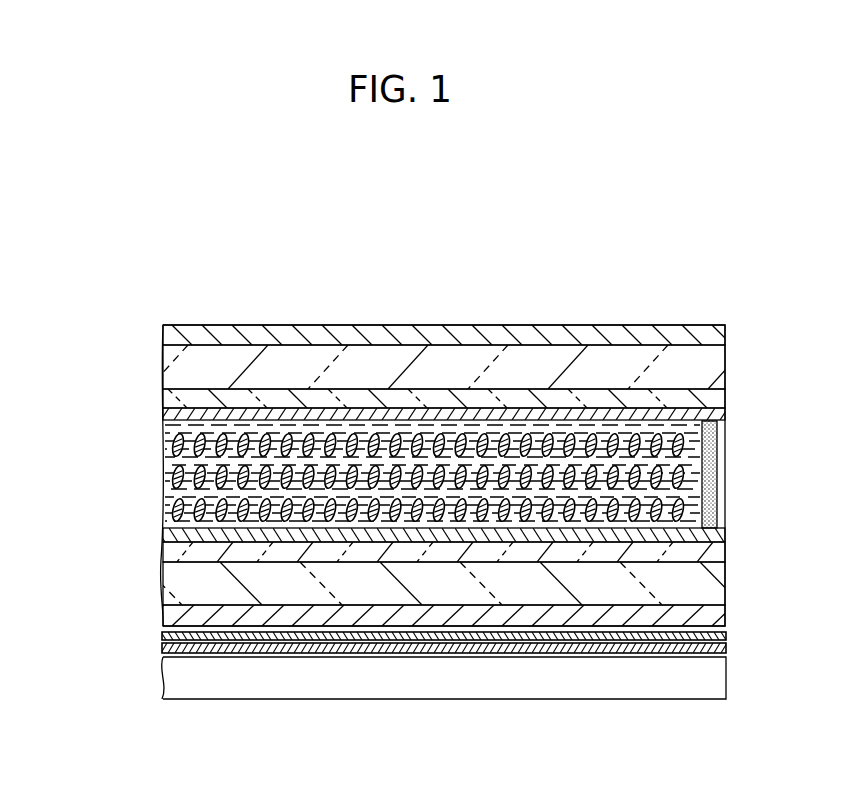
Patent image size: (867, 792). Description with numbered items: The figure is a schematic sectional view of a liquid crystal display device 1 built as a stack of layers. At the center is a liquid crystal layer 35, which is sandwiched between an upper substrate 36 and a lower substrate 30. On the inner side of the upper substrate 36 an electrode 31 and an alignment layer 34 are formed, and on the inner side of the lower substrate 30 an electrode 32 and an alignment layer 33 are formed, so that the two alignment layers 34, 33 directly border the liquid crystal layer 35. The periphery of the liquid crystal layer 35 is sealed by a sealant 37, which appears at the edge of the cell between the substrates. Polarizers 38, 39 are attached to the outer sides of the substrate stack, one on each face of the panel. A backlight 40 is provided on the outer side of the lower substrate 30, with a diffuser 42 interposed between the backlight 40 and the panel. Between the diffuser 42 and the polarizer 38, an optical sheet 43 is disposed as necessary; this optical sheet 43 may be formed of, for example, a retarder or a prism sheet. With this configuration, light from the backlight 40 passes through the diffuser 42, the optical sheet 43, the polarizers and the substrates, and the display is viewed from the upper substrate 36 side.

The liquid crystal display device 1 is at (191, 270).
The lower substrate 30 is at (164, 592).
The electrode 31 is at (164, 400).
The electrode 32 is at (164, 555).
The alignment layer 33 is at (164, 538).
The alignment layer 34 is at (164, 414).
The liquid crystal layer 35 is at (164, 470).
The upper substrate 36 is at (164, 376).
The sealant 37 is at (718, 470).
The polarizer 38 is at (164, 620).
The polarizer 39 is at (164, 341).
The backlight 40 is at (453, 688).
The diffuser 42 is at (283, 648).
The optical sheet 43 is at (726, 635).